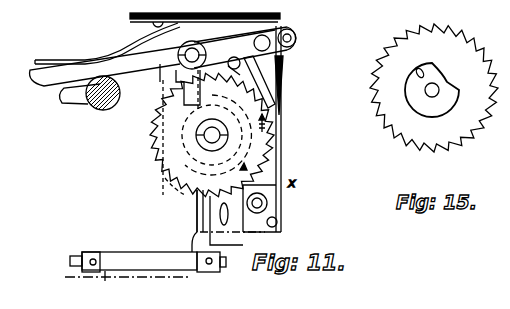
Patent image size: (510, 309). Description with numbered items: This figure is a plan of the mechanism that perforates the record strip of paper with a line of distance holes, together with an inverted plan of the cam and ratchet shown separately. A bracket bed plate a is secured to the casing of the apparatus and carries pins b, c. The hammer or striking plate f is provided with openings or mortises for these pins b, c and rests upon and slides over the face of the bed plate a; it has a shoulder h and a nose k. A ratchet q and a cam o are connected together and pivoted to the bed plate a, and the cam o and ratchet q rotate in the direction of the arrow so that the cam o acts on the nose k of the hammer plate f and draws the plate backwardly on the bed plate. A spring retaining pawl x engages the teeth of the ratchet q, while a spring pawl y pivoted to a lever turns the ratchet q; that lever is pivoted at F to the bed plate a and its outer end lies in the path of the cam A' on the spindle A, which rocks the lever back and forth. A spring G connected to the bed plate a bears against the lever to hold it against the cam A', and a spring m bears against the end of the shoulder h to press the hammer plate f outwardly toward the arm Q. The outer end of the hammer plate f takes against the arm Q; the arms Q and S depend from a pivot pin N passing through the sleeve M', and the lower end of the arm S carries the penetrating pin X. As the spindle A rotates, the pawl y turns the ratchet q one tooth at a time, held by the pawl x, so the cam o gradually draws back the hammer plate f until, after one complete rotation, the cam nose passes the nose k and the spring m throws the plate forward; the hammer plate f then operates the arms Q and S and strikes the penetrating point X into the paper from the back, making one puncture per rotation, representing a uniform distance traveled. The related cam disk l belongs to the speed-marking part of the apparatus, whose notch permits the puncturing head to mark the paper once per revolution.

In FIG. 11, the spring G is at (103, 51).
In FIG. 11, the spring retaining pawl x is at (152, 58).
In FIG. 11, the spindle A is at (103, 106).
In FIG. 11, the cam A' is at (77, 107).
In FIG. 11, the bracket bed plate a is at (160, 90).
In FIG. 11, the pivot F is at (188, 55).
In FIG. 11, the spring m is at (230, 36).
In FIG. 11, the pin c is at (246, 79).
In FIG. 11, the spring pawl y is at (280, 50).
In FIG. 11, the nose k is at (188, 91).
In FIG. 11, the cam o is at (243, 116).
In FIG. 15, the cam o is at (420, 73).
In FIG. 11, the cam disk l is at (212, 134).
In FIG. 11, the ratchet q is at (155, 153).
In FIG. 15, the ratchet q is at (434, 88).
In FIG. 11, the hammer plate f is at (196, 211).
In FIG. 11, the pin b is at (219, 212).
In FIG. 11, the pivot pin N is at (68, 262).
In FIG. 11, the arm S is at (93, 258).
In FIG. 11, the sleeve M' is at (139, 261).
In FIG. 11, the penetrating pin X is at (104, 279).
In FIG. 11, the arm Q is at (207, 272).
In FIG. 11, the shoulder h is at (282, 303).